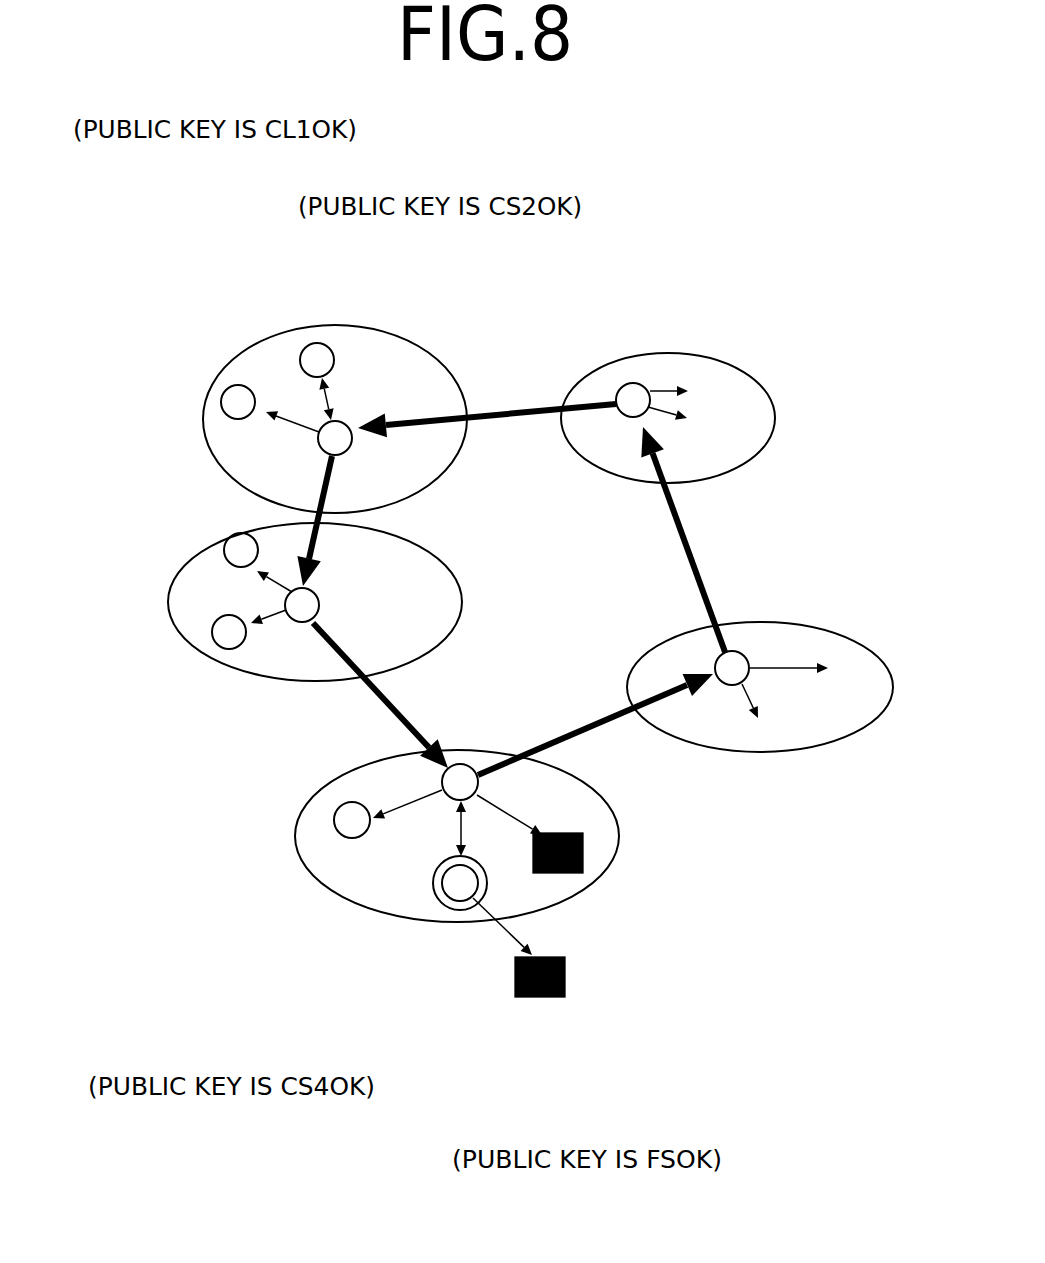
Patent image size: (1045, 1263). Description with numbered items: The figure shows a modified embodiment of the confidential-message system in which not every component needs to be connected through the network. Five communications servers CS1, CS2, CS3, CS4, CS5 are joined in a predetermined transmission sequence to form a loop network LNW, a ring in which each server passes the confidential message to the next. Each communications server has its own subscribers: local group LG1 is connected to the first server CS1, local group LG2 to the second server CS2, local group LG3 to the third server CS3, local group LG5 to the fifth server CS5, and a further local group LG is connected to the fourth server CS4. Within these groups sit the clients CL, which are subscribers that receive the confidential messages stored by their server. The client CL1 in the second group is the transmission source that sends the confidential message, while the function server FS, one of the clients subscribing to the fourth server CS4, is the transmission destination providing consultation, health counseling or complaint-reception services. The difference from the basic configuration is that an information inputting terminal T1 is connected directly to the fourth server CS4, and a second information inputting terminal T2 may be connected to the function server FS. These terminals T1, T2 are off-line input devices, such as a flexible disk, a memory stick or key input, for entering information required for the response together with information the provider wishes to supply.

The loop network LNW is at (540, 405).
The client that is transmission source CL1 is at (322, 345).
The communications server 2 CS2 is at (340, 428).
The communications server 1 CS1 is at (643, 383).
The communications server 3 CS3 is at (303, 622).
The communications server 4 CS4 is at (457, 798).
The communications server 5 CS5 is at (745, 672).
The local group LG1 is at (748, 378).
The local group LG2 is at (203, 428).
The local group LG3 is at (197, 638).
The local group LG5 is at (762, 622).
The local group LG is at (297, 822).
The client CL is at (238, 402).
The function server FS is at (467, 911).
The information inputting terminal T1 is at (585, 875).
The information inputting terminal T2 is at (542, 997).